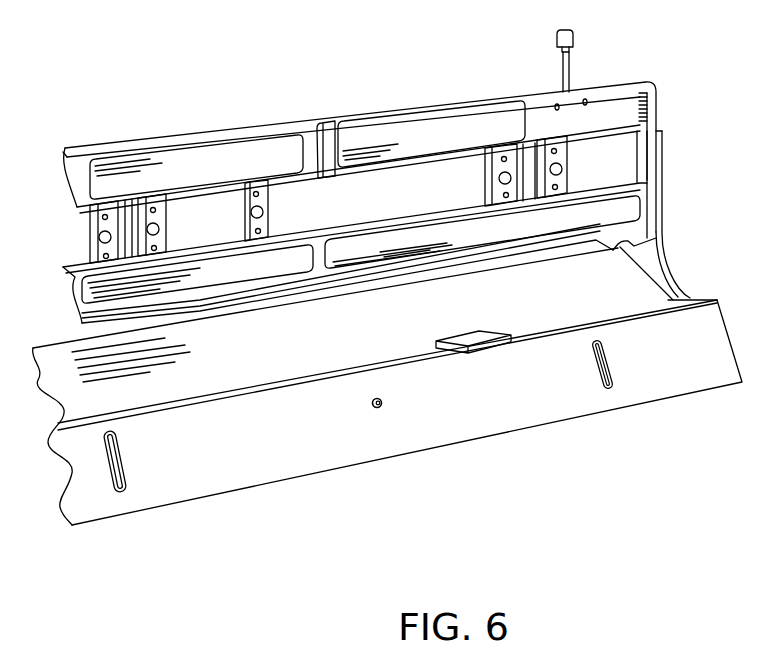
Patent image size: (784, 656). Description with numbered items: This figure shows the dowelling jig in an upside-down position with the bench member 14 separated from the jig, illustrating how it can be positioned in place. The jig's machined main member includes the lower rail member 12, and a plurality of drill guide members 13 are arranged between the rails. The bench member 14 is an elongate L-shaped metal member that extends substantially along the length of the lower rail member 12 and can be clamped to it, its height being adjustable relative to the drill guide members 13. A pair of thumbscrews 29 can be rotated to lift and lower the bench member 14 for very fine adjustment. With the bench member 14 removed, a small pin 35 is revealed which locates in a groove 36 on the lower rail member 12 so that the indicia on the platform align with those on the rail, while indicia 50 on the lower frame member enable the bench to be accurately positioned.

The lower rail member 12 is at (135, 138).
The drill guide members 13 is at (270, 213).
The bench member 14 is at (387, 386).
The thumbscrews 29 is at (574, 36).
The small pin 35 is at (372, 408).
The groove 36 is at (413, 135).
The indicia 50 is at (652, 97).